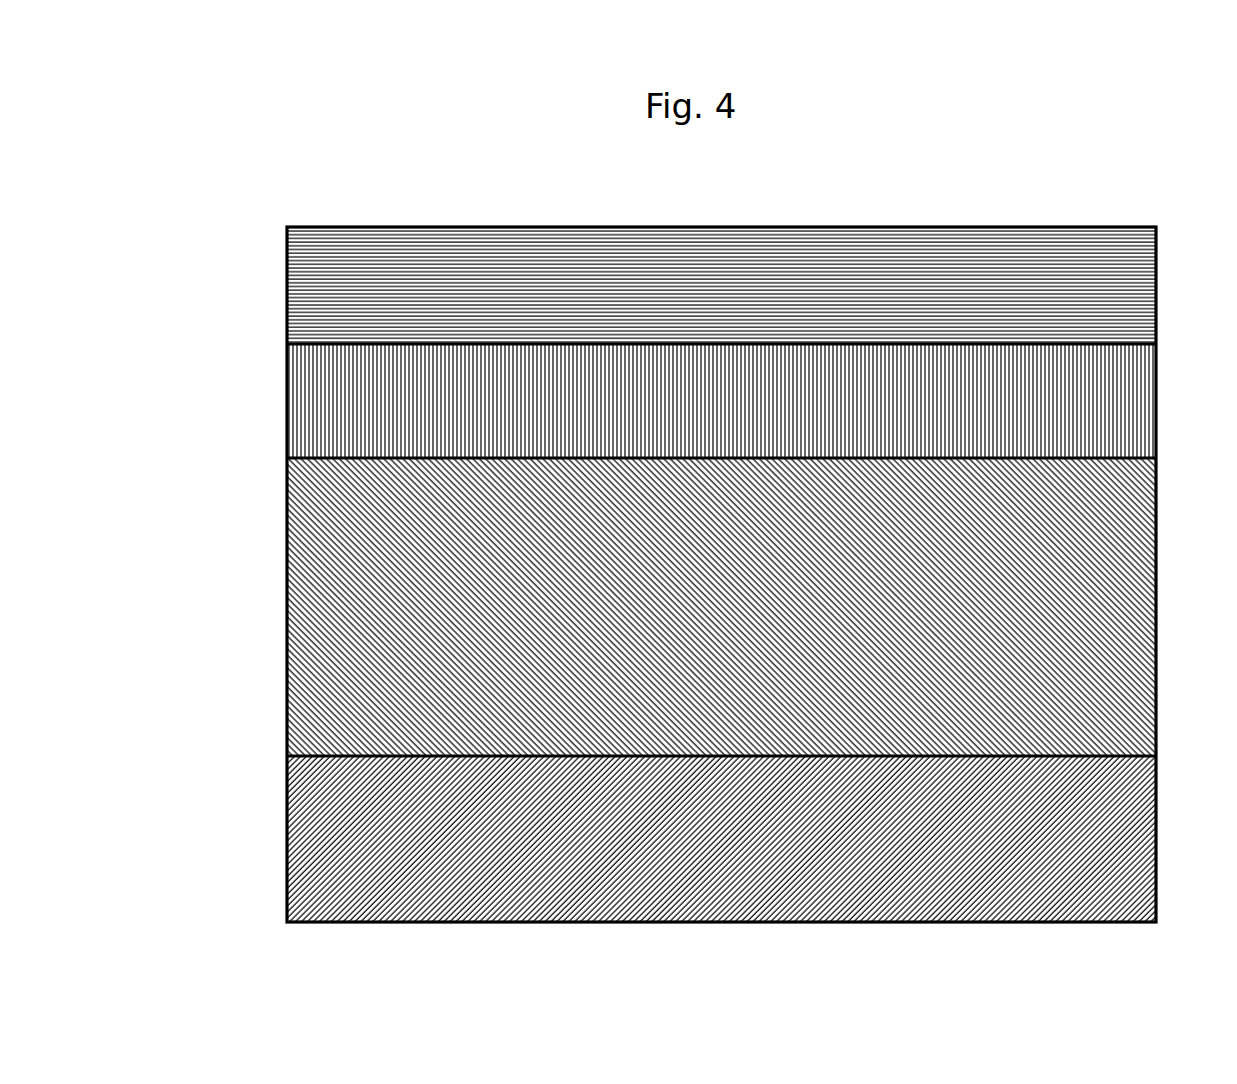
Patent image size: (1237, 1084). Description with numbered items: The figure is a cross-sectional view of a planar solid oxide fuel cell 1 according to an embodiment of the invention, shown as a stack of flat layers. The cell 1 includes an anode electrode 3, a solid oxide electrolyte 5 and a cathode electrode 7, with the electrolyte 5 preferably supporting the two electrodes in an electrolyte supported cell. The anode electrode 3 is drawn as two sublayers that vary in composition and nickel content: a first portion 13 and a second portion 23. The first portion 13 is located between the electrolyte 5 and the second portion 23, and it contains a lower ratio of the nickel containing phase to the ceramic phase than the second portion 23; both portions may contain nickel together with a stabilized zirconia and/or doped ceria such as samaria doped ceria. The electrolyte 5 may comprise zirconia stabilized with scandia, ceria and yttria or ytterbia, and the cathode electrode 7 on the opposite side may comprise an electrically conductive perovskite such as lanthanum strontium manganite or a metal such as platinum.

The solid oxide fuel cell 1 is at (950, 186).
The anode electrode 3 is at (1167, 218).
The second portion 23 is at (293, 272).
The first portion 13 is at (297, 400).
The solid oxide electrolyte 5 is at (292, 600).
The cathode electrode 7 is at (292, 835).